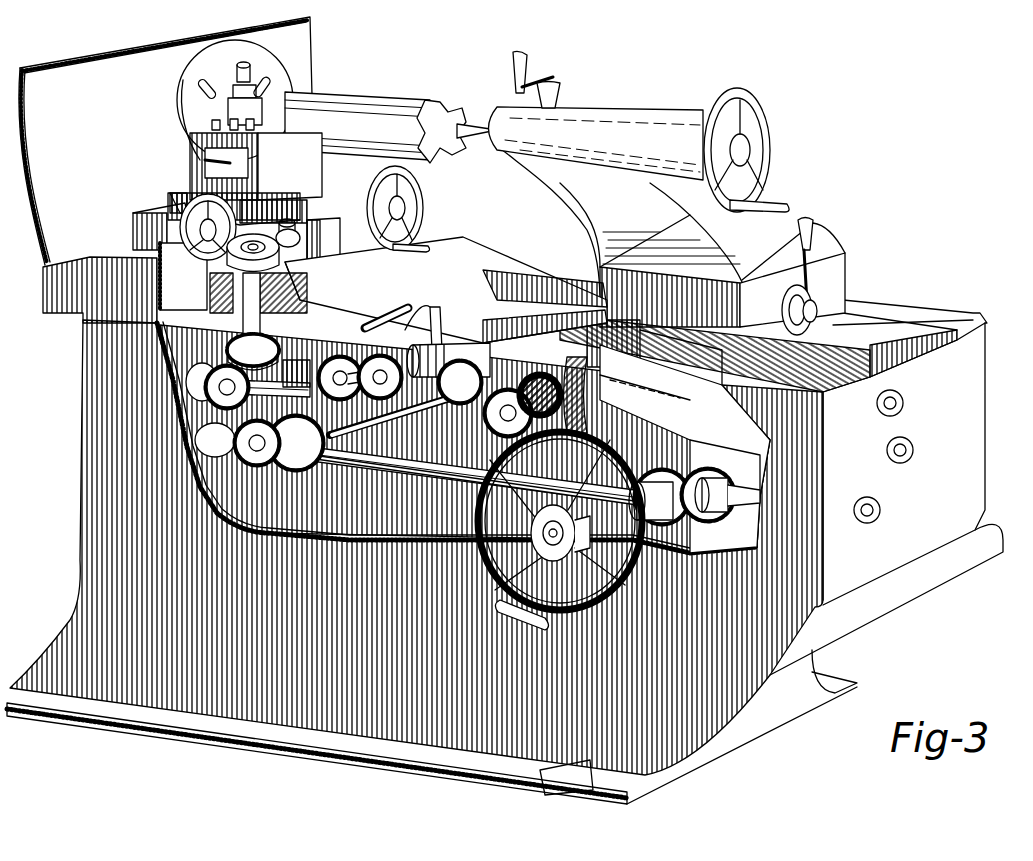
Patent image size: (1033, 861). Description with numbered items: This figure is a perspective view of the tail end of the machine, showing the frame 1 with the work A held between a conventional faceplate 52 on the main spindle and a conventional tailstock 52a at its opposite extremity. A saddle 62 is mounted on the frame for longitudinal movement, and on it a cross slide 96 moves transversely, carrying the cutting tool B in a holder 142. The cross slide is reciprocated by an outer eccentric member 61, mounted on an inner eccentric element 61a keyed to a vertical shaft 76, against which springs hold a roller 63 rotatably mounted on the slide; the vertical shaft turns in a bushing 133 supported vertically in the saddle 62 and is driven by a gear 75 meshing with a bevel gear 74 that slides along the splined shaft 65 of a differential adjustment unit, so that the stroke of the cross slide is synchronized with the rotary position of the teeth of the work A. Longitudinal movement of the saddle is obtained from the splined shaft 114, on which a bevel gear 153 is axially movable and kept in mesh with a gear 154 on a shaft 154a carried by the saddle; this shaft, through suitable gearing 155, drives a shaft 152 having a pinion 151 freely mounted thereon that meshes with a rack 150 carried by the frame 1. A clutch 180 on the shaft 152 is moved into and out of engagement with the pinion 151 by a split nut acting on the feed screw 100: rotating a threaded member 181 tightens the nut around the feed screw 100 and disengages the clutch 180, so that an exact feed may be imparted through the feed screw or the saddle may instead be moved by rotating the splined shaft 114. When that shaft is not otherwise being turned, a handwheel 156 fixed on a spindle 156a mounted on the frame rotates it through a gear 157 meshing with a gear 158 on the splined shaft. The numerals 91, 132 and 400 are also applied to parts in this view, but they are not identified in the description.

The frame 1 is at (85, 398).
The faceplate 52 is at (262, 60).
The work A is at (360, 92).
The tailstock 52a is at (585, 108).
The holder 142 is at (241, 159).
The cutting tool B is at (205, 160).
The roller 63 is at (290, 226).
The outer eccentric member 61 is at (278, 258).
The dial 132 is at (250, 239).
The inner eccentric element 61a is at (271, 246).
The saddle 62 is at (380, 272).
The cross slide 96 is at (322, 257).
The handwheel 91 is at (212, 258).
The bushing 133 is at (210, 284).
The vertical shaft 76 is at (225, 335).
The bevel gear 74 is at (195, 364).
The gear 75 is at (225, 368).
The shaft 65 is at (196, 390).
The bevel gear 153 is at (238, 440).
The gear 154 is at (280, 496).
The shaft 154a is at (328, 500).
The splined shaft 114 is at (425, 488).
The handwheel 156 is at (478, 520).
The spindle 156a is at (640, 542).
The gear 157 is at (650, 481).
The gear 158 is at (725, 470).
The gearing 155 is at (590, 378).
The housing 400 is at (660, 385).
The feed screw 100 is at (445, 364).
The rack 150 is at (346, 356).
The clutch 180 is at (385, 357).
The threaded member 181 is at (352, 328).
The shaft 152 is at (350, 365).
The pinion 151 is at (400, 412).